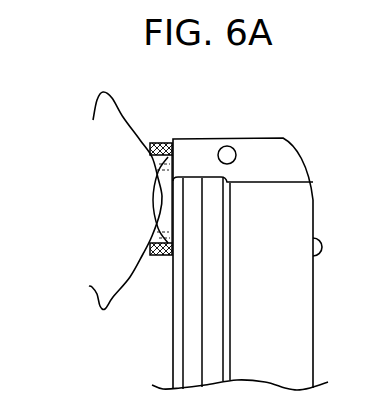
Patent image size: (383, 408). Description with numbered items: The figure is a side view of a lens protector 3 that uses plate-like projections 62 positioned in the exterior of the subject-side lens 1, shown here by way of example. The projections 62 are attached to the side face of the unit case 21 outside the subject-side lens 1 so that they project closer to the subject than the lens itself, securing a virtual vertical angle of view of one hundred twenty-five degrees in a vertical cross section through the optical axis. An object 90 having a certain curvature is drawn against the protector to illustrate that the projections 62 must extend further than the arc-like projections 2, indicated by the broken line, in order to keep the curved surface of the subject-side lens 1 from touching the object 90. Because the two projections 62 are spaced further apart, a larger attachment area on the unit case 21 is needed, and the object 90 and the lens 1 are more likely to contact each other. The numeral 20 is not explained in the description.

The object 90 is at (66, 216).
The lens protector 3 is at (147, 114).
The projections 62 is at (155, 143).
The projections 2 is at (157, 162).
The subject-side lens 1 is at (162, 222).
The housing 20 is at (282, 115).
The unit case 21 is at (213, 138).